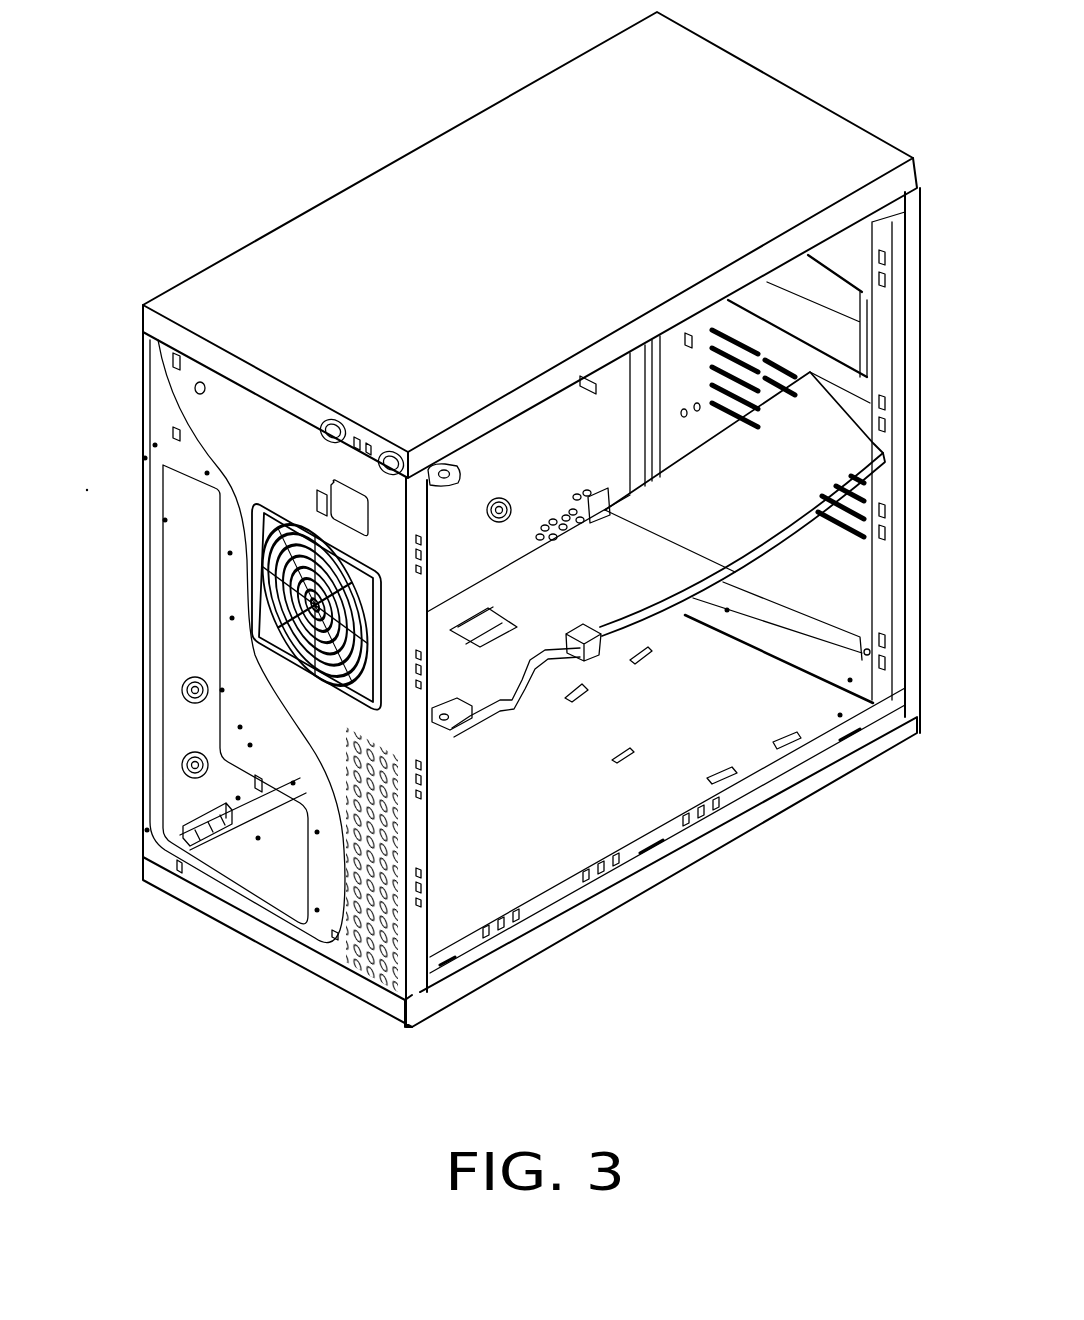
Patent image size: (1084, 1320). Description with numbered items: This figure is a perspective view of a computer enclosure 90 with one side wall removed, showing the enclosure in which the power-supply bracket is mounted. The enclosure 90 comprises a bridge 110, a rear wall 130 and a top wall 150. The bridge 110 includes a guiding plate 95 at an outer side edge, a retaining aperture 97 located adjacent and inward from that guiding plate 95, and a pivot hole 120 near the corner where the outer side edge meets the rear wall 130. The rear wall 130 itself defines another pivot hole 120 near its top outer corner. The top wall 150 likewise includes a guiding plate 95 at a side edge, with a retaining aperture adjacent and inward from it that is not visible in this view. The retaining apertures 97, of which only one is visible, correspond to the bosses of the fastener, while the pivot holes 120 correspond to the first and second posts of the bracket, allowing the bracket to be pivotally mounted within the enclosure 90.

The computer enclosure 90 is at (421, 120).
The top wall 150 is at (772, 128).
The rear wall 130 is at (248, 410).
The guiding plate 95 is at (580, 383).
The pivot hole 120 is at (452, 470).
The bridge 110 is at (762, 508).
The retaining aperture 97 is at (596, 618).